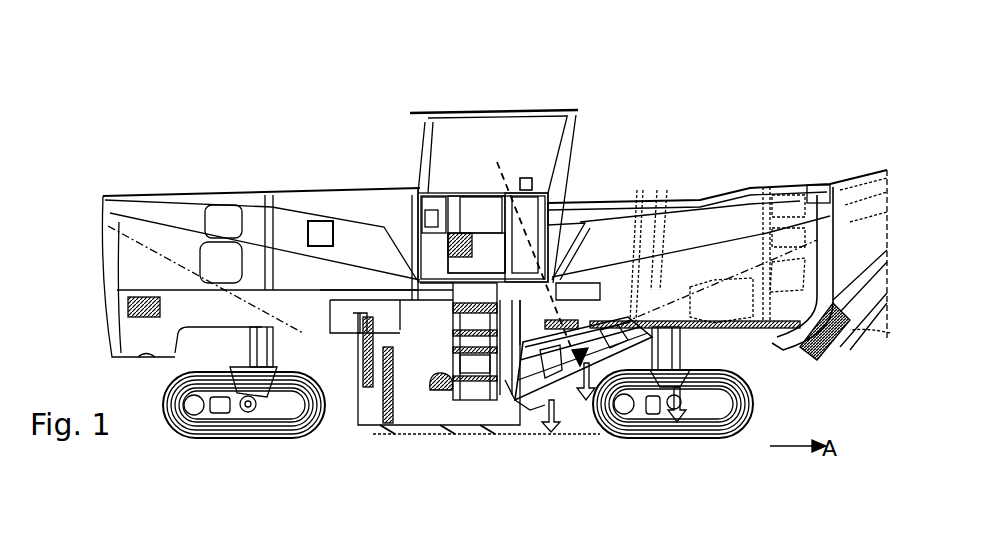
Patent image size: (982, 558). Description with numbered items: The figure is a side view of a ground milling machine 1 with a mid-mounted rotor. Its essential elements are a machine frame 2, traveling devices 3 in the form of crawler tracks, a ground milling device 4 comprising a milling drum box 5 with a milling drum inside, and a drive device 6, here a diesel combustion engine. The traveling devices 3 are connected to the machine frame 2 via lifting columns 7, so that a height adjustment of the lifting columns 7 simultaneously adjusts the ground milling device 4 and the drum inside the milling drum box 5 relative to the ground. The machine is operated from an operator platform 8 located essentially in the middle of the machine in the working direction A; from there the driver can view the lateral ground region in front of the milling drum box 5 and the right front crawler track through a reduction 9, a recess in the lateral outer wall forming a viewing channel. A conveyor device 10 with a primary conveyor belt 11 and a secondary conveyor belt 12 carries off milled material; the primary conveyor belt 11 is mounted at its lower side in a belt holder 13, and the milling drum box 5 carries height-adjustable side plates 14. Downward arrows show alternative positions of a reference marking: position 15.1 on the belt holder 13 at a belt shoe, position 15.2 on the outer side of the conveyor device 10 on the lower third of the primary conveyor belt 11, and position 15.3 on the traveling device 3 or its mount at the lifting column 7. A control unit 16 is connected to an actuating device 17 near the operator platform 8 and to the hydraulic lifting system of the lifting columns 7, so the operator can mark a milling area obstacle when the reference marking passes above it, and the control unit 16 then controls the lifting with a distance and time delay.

The ground milling machine 1 is at (311, 84).
The machine frame 2 is at (602, 293).
The traveling devices 3 is at (233, 420).
The ground milling device 4 is at (437, 408).
The milling drum box 5 is at (460, 432).
The drive device 6 is at (160, 235).
The lifting columns 7 is at (252, 347).
The operator platform 8 is at (518, 153).
The reduction 9 is at (580, 300).
The conveyor device 10 is at (602, 323).
The primary conveyor belt 11 is at (602, 323).
The secondary conveyor belt 12 is at (853, 277).
The belt holder 13 is at (505, 433).
The side plates 14 is at (530, 422).
The reference marking position 15.1 is at (550, 434).
The reference marking position 15.2 is at (583, 400).
The reference marking position 15.3 is at (678, 423).
The control unit 16 is at (318, 233).
The actuating device 17 is at (533, 182).